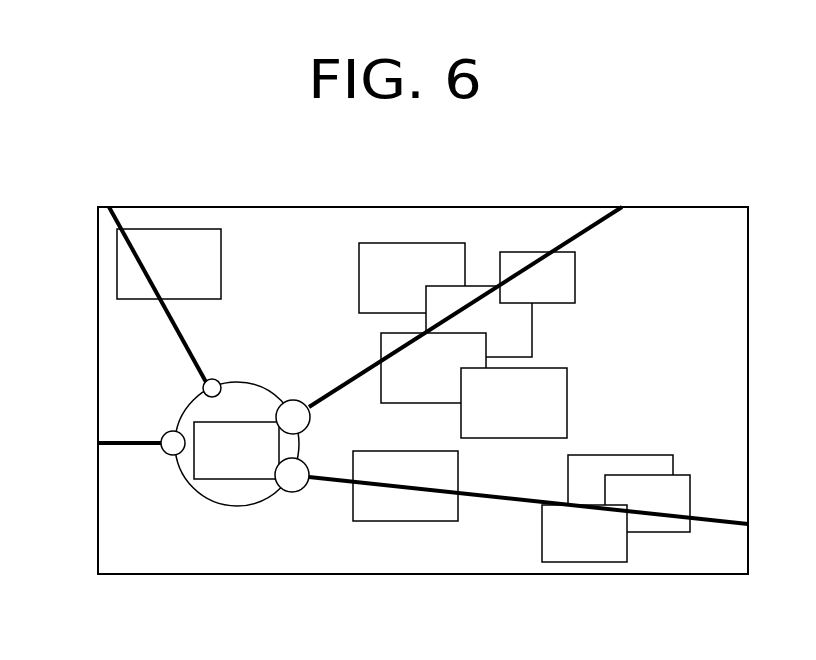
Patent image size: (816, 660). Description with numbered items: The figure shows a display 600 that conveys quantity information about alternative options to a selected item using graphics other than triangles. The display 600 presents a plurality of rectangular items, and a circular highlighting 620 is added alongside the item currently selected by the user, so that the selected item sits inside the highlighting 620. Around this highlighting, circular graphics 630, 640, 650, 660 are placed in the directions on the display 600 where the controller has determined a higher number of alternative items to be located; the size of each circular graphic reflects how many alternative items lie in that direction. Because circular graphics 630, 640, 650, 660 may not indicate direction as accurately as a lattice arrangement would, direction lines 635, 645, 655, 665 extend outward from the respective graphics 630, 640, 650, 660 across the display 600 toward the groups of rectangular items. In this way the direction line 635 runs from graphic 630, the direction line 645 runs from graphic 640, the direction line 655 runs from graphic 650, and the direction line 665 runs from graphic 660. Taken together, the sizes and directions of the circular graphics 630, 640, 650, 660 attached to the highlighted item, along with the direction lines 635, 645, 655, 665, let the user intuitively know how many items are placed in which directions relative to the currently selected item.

The display 600 is at (453, 141).
The circular highlighting 620 is at (233, 506).
The circular graphic 630 is at (292, 492).
The direction line 635 is at (505, 501).
The circular graphic 640 is at (293, 400).
The direction line 645 is at (578, 235).
The circular graphic 650 is at (203, 386).
The direction line 655 is at (168, 318).
The circular graphic 660 is at (161, 436).
The direction line 665 is at (130, 445).